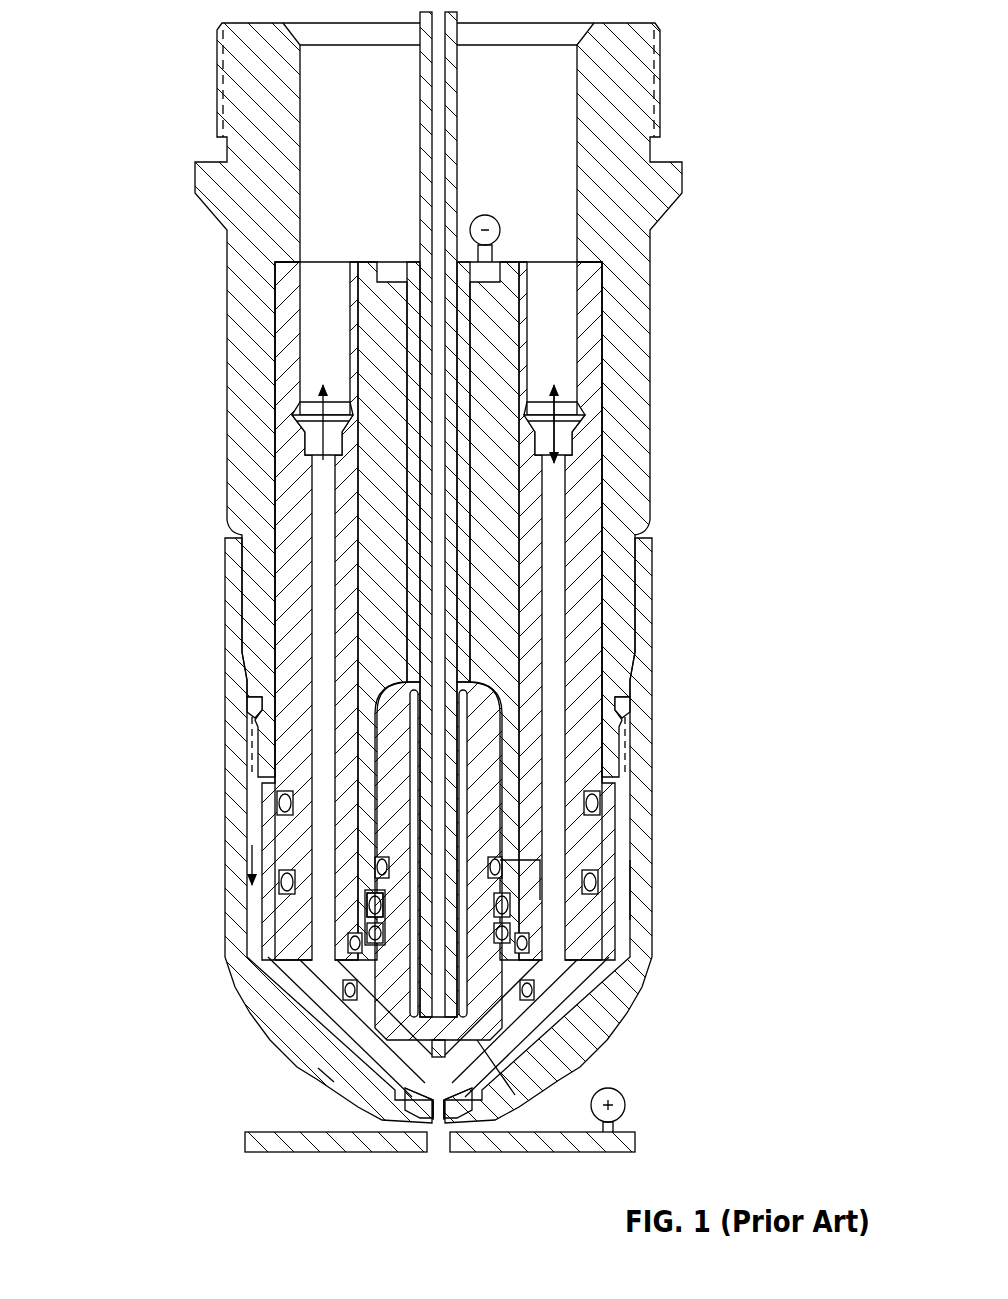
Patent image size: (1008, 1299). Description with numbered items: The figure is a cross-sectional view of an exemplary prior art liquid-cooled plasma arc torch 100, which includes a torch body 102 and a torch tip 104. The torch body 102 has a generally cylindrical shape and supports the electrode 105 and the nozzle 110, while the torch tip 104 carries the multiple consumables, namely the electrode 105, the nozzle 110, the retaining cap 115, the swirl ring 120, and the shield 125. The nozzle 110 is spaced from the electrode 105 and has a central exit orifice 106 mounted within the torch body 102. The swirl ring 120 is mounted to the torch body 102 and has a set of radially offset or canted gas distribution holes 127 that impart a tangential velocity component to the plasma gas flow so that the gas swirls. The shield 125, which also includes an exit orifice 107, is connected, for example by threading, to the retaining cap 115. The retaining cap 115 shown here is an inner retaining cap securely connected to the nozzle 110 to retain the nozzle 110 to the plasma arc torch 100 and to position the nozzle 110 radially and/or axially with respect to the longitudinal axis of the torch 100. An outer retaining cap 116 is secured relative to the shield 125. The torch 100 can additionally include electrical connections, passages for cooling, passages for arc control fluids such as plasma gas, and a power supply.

The plasma arc torch 100 is at (418, 606).
The torch body 102 is at (667, 487).
The torch tip 104 is at (667, 767).
The electrode 105 is at (405, 973).
The central exit orifice 106 is at (438, 1106).
The exit orifice 107 is at (436, 1120).
The nozzle 110 is at (497, 1012).
The retaining cap 115 is at (533, 883).
The outer retaining cap 116 is at (645, 883).
The swirl ring 120 is at (368, 917).
The shield 125 is at (332, 1079).
The gas distribution holes 127 is at (372, 908).